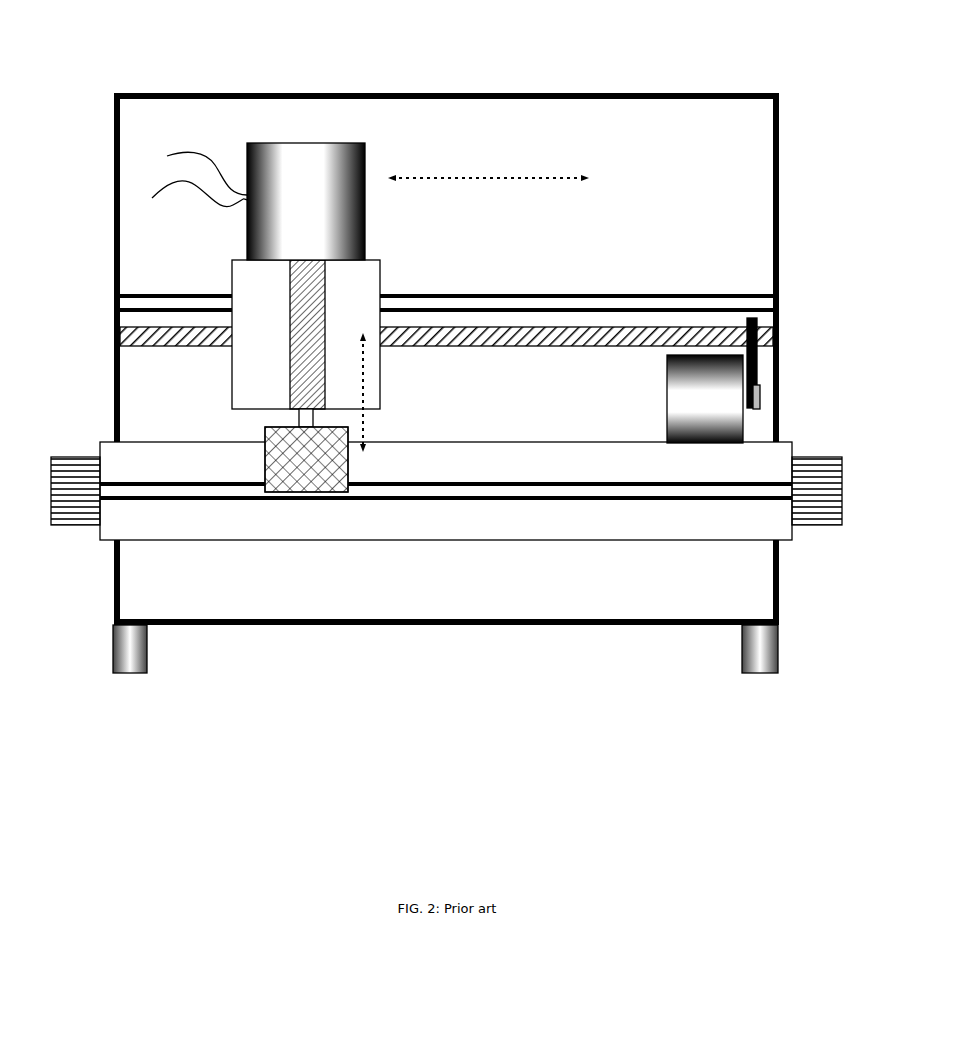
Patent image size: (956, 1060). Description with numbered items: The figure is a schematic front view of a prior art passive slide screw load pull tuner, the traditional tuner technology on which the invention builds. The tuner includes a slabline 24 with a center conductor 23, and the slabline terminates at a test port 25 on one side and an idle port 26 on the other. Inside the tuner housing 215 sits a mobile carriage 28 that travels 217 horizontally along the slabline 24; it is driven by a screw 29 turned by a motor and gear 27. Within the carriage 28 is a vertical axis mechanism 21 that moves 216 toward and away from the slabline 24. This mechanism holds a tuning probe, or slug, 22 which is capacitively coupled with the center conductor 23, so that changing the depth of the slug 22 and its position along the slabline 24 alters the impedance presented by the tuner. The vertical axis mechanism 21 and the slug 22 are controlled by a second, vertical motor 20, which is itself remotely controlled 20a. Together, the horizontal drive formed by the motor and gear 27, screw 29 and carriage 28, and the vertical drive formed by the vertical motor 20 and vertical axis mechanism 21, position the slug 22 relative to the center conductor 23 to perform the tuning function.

The vertical motor 20 is at (292, 143).
The remote control 20a is at (190, 179).
The vertical axis mechanism 21 is at (290, 370).
The tuning probe (slug) 22 is at (350, 490).
The center conductor 23 is at (222, 490).
The slabline 24 is at (578, 523).
The test port 25 is at (68, 525).
The idle port 26 is at (820, 523).
The motor and gear 27 is at (745, 425).
The mobile carriage 28 is at (232, 275).
The screw 29 is at (660, 327).
The tuner housing 215 is at (677, 582).
The vertical movement 216 is at (363, 370).
The horizontal travel 217 is at (452, 178).